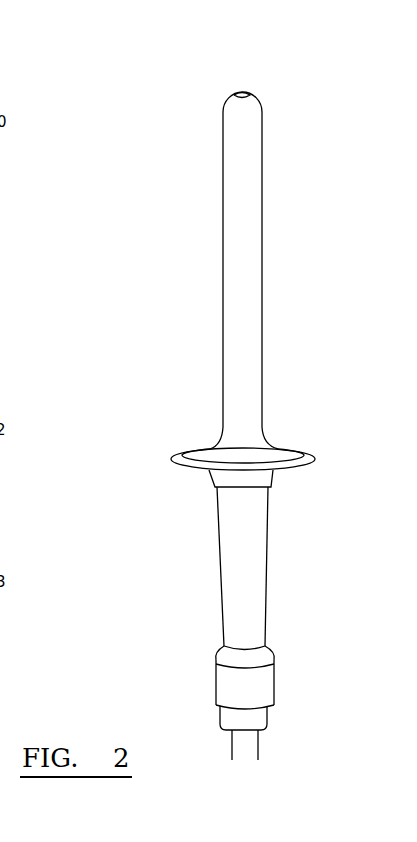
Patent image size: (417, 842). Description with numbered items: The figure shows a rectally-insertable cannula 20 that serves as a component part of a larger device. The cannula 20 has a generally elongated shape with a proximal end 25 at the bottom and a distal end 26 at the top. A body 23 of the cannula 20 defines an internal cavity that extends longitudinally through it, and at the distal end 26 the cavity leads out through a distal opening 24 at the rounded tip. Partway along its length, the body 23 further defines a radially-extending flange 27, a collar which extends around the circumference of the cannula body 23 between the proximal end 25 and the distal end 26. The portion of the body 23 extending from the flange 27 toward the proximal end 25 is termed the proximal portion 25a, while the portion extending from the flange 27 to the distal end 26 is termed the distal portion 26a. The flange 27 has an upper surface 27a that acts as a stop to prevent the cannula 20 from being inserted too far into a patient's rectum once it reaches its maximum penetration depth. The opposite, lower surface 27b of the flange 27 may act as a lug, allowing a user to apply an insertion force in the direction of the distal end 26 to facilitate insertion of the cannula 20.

The cannula 20 is at (271, 188).
The body 23 is at (243, 277).
The distal opening 24 is at (243, 91).
The proximal end 25 is at (262, 692).
The proximal portion 25a is at (173, 488).
The distal end 26 is at (263, 113).
The distal portion 26a is at (172, 93).
The radially-extending flange 27 is at (172, 458).
The upper surface 27a is at (278, 448).
The lower surface 27b is at (280, 470).